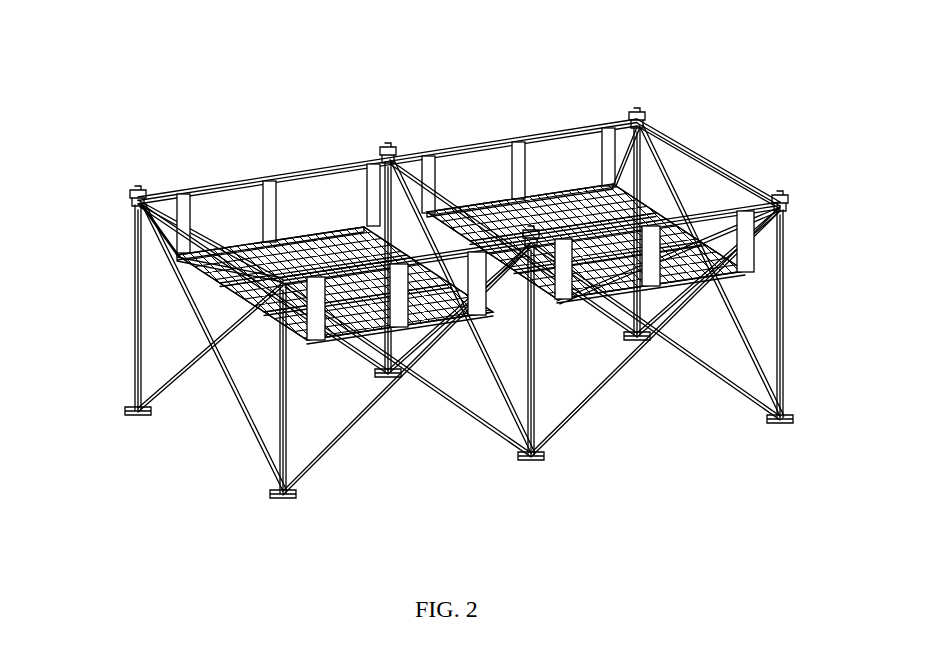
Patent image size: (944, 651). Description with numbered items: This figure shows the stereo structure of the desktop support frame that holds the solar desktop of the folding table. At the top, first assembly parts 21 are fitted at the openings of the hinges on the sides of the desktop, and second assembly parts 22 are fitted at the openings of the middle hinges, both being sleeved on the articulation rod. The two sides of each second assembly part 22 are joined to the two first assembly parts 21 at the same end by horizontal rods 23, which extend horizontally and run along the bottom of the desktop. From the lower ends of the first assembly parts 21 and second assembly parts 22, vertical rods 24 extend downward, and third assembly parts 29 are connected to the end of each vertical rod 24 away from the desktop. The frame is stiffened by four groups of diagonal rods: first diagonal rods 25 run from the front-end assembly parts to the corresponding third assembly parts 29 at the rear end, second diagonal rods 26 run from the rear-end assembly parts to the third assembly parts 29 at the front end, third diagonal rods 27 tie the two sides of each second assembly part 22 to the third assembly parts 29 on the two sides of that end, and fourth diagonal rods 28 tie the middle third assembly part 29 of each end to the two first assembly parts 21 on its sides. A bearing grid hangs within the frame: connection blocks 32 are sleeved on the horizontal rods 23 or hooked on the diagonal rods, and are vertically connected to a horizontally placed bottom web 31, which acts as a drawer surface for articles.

The first assembly part 21 is at (257, 245).
The second assembly part 22 is at (528, 235).
The horizontal rod 23 is at (360, 226).
The vertical rod 24 is at (277, 418).
The first diagonal rod 25 is at (180, 373).
The second diagonal rod 26 is at (232, 395).
The third diagonal rod 27 is at (521, 440).
The fourth diagonal rod 28 is at (357, 347).
The third assembly part 29 is at (790, 421).
The bottom web 31 is at (648, 279).
The connection block 32 is at (652, 258).